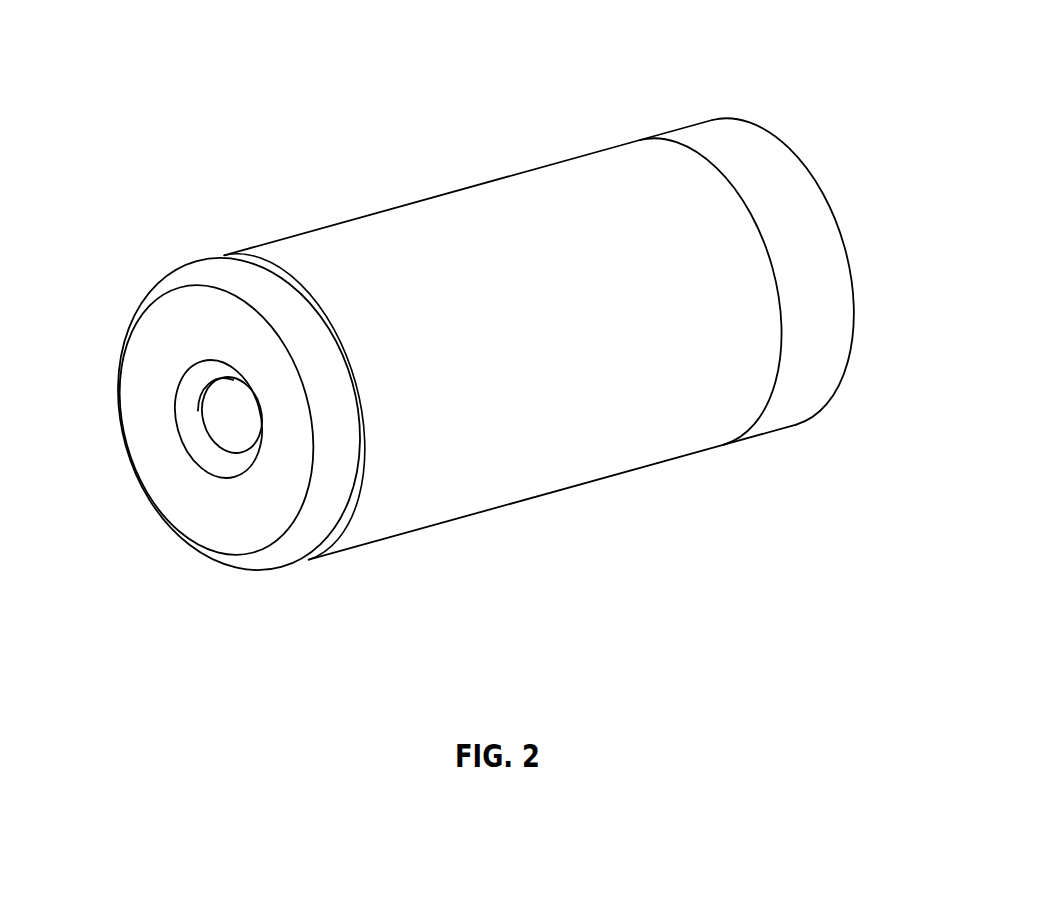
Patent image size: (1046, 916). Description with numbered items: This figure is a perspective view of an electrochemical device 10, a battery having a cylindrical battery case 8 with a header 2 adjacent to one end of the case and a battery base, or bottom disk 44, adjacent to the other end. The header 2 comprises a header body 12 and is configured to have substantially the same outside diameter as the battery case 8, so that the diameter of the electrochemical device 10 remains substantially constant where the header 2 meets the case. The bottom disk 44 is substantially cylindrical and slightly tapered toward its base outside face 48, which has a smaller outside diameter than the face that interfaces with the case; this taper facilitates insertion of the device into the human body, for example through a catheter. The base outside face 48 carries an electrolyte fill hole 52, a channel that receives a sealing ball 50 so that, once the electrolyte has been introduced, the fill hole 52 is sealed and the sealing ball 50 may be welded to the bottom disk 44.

The electrochemical device 10 is at (258, 83).
The header 2 is at (713, 112).
The battery case 8 is at (503, 196).
The header body 12 is at (815, 387).
The bottom disk 44 is at (237, 638).
The base outside face 48 is at (153, 371).
The electrolyte fill hole 52 is at (190, 453).
The sealing ball 50 is at (227, 443).